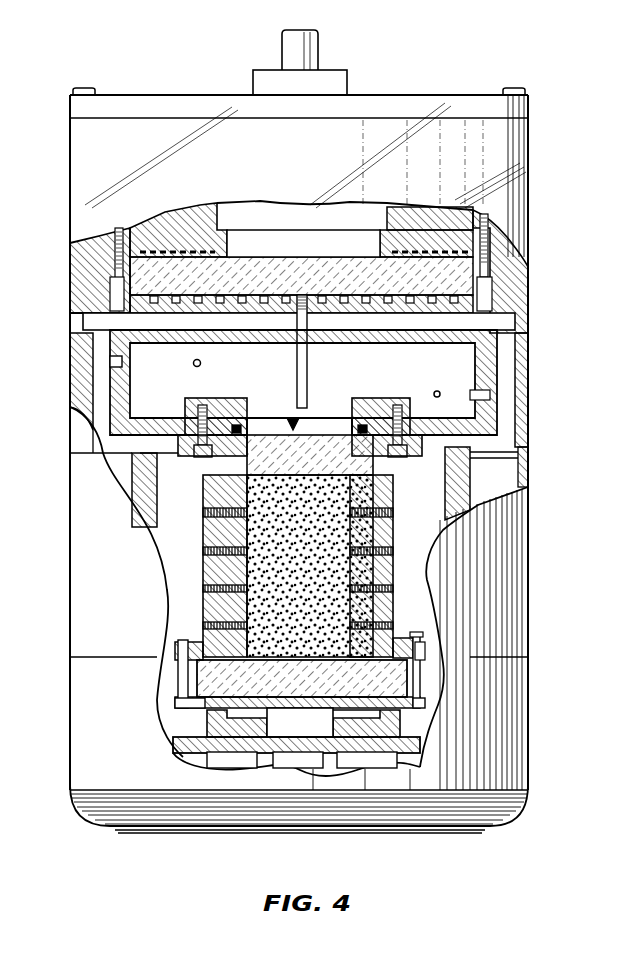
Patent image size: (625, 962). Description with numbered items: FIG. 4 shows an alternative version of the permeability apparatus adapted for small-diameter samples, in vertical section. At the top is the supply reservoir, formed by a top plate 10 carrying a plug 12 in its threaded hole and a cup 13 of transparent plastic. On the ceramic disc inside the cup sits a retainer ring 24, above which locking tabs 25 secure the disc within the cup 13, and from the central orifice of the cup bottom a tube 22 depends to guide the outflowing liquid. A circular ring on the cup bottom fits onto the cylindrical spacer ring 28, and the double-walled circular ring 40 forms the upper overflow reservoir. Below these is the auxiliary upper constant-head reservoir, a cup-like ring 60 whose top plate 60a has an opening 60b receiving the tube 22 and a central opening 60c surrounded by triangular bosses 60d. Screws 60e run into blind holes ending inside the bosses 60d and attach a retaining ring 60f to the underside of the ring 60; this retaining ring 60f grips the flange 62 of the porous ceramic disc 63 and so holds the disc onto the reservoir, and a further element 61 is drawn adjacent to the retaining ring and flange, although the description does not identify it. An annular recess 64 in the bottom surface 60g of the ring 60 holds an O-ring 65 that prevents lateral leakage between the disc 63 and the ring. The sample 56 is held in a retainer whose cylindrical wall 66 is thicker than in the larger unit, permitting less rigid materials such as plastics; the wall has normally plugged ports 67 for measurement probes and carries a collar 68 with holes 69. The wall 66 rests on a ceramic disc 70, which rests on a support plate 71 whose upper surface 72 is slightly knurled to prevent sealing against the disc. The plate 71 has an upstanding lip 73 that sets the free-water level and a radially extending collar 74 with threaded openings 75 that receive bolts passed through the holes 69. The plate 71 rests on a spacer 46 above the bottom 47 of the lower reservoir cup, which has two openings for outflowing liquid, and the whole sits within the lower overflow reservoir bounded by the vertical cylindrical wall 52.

The top plate 10 is at (398, 97).
The plug 12 is at (320, 45).
The cup 13 is at (522, 165).
The tube 22 is at (328, 308).
The retainer ring 24 is at (228, 238).
The locking tabs 25 is at (197, 212).
The cylindrical spacer ring 28 is at (520, 415).
The double-walled circular ring 40 is at (78, 572).
The spacers 46 is at (405, 752).
The bottom of the cup 47 is at (302, 742).
The vertical cylindrical wall 52 is at (78, 728).
The sample 56 is at (310, 566).
The cup-like ring 60 is at (492, 375).
The top plate 60a is at (398, 338).
The opening 60b is at (315, 340).
The central opening 60c is at (293, 425).
The triangular bosses 60d is at (232, 400).
The screws 60e is at (185, 410).
The retaining ring 60f is at (212, 458).
The bottom surface 60g is at (470, 396).
The flange 61 is at (247, 480).
The flange 62 is at (240, 442).
The porous ceramic disc 63 is at (330, 438).
The annular recess 64 is at (360, 422).
The O-ring 65 is at (398, 420).
The cylindrical wall 66 is at (394, 518).
The ports 67 is at (203, 543).
The collar 68 is at (398, 638).
The holes 69 is at (175, 652).
The ceramic disc 70 is at (528, 655).
The support plate 71 is at (205, 718).
The upper surface 72 is at (366, 698).
The upstanding lip 73 is at (180, 680).
The collar 74 is at (175, 703).
The threaded openings 75 is at (428, 705).